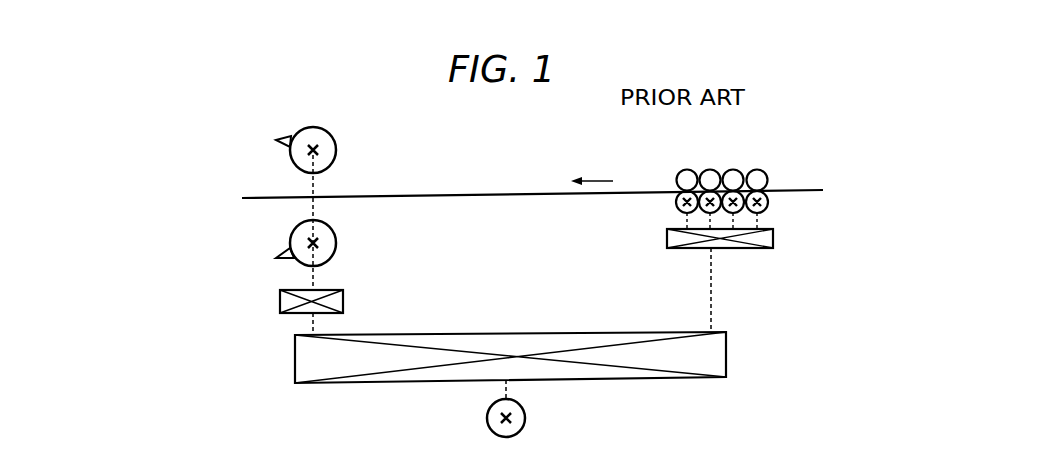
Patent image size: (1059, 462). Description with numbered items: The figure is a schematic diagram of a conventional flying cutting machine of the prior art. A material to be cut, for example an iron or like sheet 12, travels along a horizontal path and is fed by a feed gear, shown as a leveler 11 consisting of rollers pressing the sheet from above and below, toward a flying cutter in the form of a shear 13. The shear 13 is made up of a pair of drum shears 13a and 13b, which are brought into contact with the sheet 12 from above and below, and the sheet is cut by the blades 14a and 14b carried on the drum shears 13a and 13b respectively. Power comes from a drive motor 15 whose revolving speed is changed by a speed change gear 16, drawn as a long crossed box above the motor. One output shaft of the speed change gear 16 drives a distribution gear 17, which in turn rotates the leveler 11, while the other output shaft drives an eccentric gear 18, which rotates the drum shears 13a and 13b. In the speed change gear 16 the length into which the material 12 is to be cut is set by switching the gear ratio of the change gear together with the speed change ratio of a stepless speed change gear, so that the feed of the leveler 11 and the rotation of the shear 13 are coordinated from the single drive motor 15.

The leveler 11 is at (733, 170).
The sheet 12 is at (509, 193).
The shear 13 is at (333, 132).
The drum shear 13a is at (338, 151).
The drum shear 13b is at (338, 243).
The blade 14a is at (278, 142).
The blade 14b is at (279, 254).
The drive motor 15 is at (526, 417).
The speed change gear 16 is at (529, 334).
The distribution gear 17 is at (666, 240).
The eccentric gear 18 is at (344, 299).